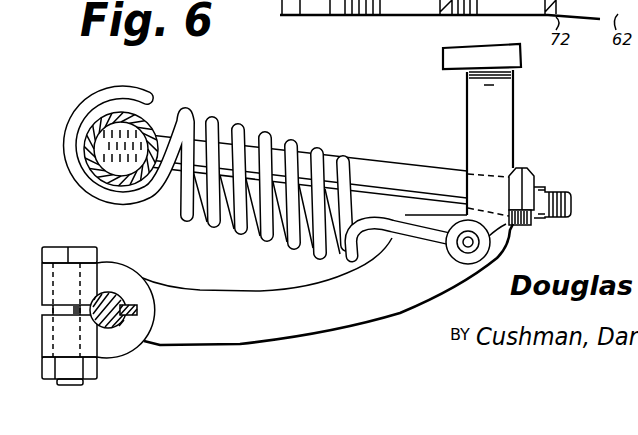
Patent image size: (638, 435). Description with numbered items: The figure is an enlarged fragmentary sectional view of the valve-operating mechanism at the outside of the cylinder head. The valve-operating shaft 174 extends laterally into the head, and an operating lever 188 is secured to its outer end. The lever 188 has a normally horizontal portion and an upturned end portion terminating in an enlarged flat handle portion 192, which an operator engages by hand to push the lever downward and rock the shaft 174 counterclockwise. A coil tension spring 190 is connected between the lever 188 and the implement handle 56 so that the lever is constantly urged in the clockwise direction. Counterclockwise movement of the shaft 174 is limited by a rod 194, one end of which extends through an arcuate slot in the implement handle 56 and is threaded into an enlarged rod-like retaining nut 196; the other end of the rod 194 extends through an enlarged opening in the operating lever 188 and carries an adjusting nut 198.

The implement handle 56 is at (93, 107).
The rod-like retaining nut 196 is at (126, 120).
The coil tension spring 190 is at (242, 123).
The flat handle portion 192 is at (443, 63).
The rod 194 is at (380, 168).
The adjusting nut 198 is at (527, 171).
The operating lever 188 is at (281, 351).
The valve-operating shaft 174 is at (122, 352).